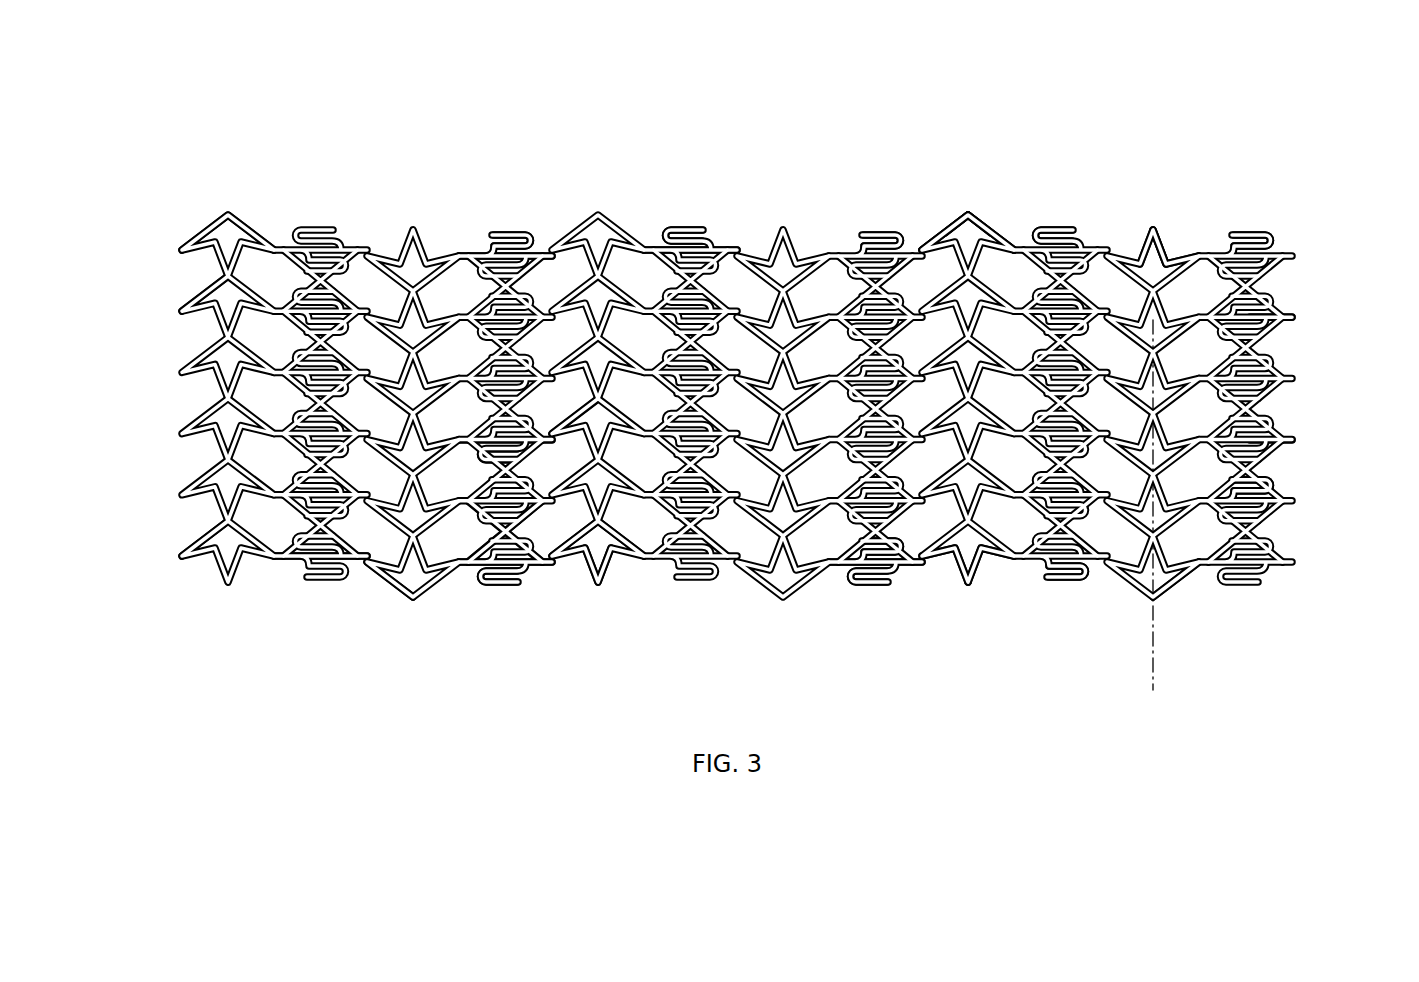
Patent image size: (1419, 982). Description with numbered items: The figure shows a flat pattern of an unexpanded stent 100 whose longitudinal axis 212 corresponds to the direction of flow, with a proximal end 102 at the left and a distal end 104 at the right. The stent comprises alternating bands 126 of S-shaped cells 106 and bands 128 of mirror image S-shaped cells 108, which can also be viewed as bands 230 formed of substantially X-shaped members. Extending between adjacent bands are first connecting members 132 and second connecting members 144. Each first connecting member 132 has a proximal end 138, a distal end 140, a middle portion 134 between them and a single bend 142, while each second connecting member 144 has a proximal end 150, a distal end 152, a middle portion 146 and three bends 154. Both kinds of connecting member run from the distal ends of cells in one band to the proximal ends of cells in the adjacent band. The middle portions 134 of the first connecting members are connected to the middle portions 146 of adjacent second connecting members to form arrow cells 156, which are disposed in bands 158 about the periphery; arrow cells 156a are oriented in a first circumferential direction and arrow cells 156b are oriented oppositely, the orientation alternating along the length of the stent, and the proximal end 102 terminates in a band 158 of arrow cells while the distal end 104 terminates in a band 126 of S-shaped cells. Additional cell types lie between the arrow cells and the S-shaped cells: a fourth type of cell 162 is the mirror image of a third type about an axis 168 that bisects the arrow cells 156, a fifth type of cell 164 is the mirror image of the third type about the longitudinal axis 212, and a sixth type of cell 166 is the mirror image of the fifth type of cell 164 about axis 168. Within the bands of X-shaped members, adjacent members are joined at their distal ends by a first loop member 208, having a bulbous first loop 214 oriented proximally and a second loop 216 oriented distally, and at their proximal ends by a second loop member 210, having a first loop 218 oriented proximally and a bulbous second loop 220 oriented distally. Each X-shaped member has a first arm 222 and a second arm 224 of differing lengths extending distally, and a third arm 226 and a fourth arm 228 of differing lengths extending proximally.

The stent 100 is at (282, 200).
The proximal end 102 is at (156, 304).
The distal end 104 is at (1312, 302).
The S-shaped cell 106 is at (485, 233).
The mirror image S-shaped cell 108 is at (712, 233).
The band of S-shaped cells 126 is at (558, 170).
The band of mirror image S-shaped cells 128 is at (640, 170).
The first connecting member 132 is at (980, 213).
The middle portion 134 is at (958, 213).
The proximal end 138 is at (920, 238).
The distal end 140 is at (1015, 238).
The single bend 142 is at (968, 213).
The second connecting member 144 is at (942, 568).
The middle portion 146 is at (1167, 238).
The proximal end 150 is at (1103, 238).
The distal end 152 is at (1213, 238).
The bends 154 is at (1142, 238).
The arrow cell 156 is at (200, 234).
The arrow cell 156a is at (180, 566).
The arrow cell 156b is at (370, 580).
The band of arrow cells 158 is at (555, 665).
The fourth type of cell 162 is at (1078, 577).
The fifth type of cell 164 is at (995, 558).
The sixth type of cell 166 is at (860, 228).
The axis 168 is at (1157, 667).
The first loop member 208 is at (872, 587).
The second loop member 210 is at (490, 437).
The longitudinal axis 212 is at (1343, 402).
The first loop 214 is at (862, 563).
The second loop 216 is at (898, 583).
The first loop 218 is at (490, 451).
The second loop 220 is at (541, 436).
The first arm 222 is at (538, 560).
The second arm 224 is at (474, 566).
The third arm 226 is at (480, 525).
The fourth arm 228 is at (462, 580).
The band of X-shaped members 230 is at (275, 660).